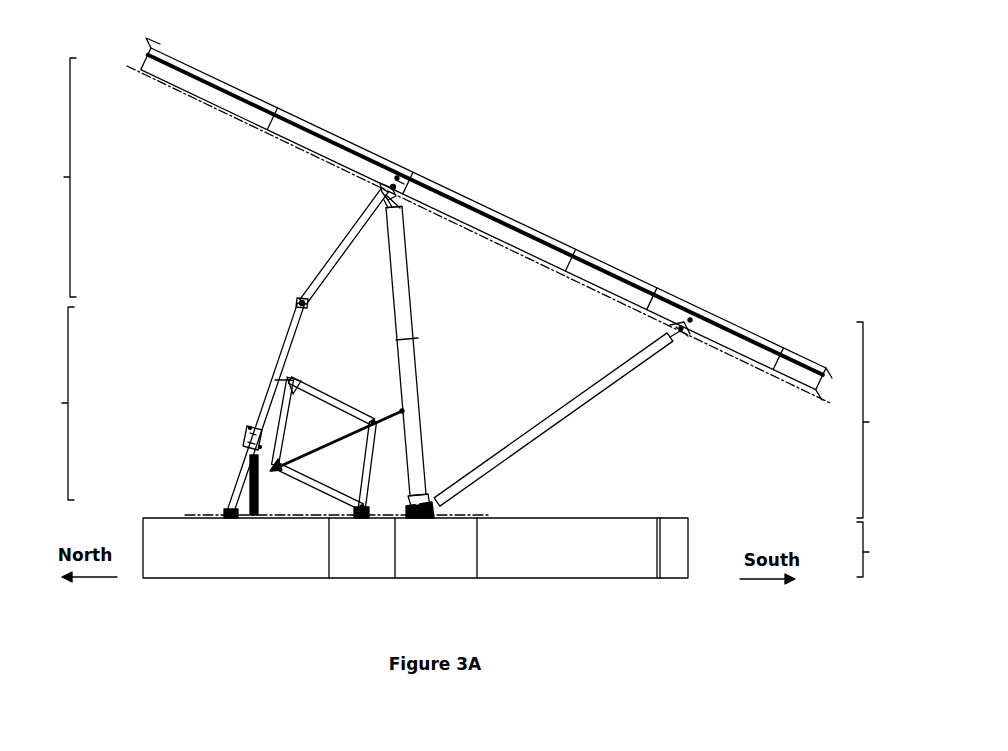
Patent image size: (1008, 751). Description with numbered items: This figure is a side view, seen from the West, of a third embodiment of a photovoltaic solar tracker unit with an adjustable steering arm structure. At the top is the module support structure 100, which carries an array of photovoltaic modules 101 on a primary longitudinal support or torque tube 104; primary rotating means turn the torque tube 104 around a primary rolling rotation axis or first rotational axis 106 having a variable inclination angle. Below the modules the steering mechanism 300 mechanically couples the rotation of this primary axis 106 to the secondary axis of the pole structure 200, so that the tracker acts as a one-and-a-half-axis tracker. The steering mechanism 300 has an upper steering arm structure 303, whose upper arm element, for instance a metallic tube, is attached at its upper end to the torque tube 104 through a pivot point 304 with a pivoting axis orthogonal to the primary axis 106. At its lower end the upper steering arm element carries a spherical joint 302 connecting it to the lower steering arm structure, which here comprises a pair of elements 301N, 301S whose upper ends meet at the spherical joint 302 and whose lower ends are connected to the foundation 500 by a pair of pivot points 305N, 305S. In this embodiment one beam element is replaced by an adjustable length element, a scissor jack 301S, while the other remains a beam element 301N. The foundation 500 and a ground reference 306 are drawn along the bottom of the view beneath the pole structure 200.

The module support structure 100 is at (44, 177).
The photovoltaic modules 101 is at (628, 280).
The torque tube 104 is at (762, 350).
The first rotational axis 106 is at (127, 66).
The pole structure 200 is at (886, 420).
The steering mechanism 300 is at (43, 403).
The steering arm element 301N is at (265, 403).
The scissor jack 301S is at (327, 398).
The spherical joint 302 is at (300, 303).
The upper steering arm structure 303 is at (345, 240).
The pivot point 304 is at (384, 175).
The pivot point 305N is at (231, 519).
The pivot point 305S is at (362, 519).
The ground line 306 is at (207, 514).
The foundation 500 is at (530, 548).